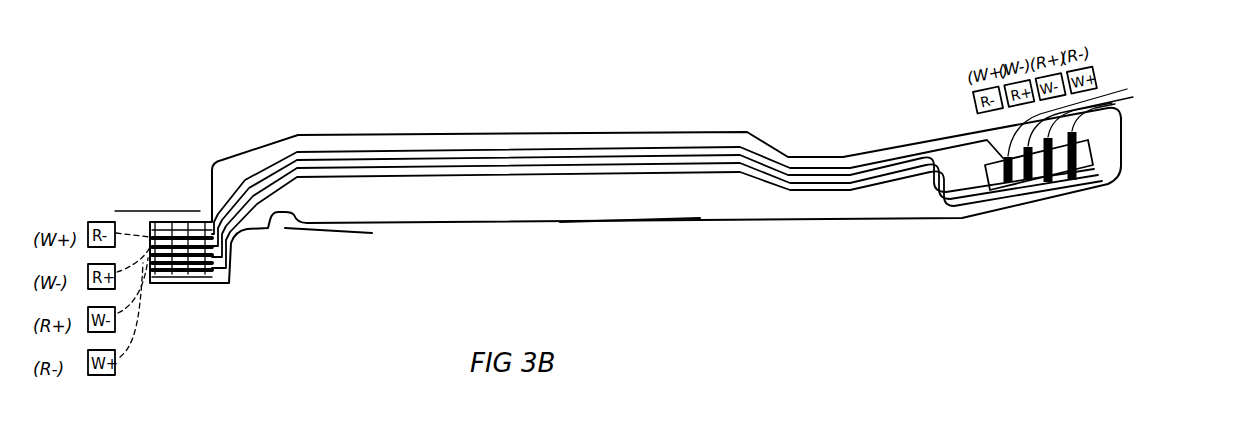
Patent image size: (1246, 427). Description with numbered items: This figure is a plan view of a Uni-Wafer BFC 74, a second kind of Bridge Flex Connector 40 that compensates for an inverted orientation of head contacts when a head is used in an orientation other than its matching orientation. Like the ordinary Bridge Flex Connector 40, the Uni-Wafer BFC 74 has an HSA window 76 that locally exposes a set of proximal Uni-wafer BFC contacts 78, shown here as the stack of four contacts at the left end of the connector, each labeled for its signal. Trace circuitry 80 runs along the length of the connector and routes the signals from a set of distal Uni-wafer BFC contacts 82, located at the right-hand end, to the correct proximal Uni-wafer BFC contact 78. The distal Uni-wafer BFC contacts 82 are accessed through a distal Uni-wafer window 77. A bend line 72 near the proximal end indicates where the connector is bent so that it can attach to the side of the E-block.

The Bridge Flex Connector 40 is at (613, 223).
The bend line 72 is at (327, 234).
The Uni-Wafer BFC 74 is at (613, 116).
The HSA window 76 is at (191, 272).
The distal Uni-wafer window 77 is at (1090, 153).
The proximal Uni-wafer BFC contacts 78 is at (155, 222).
The trace circuitry 80 is at (490, 152).
The distal Uni-wafer BFC contacts 82 is at (1085, 117).